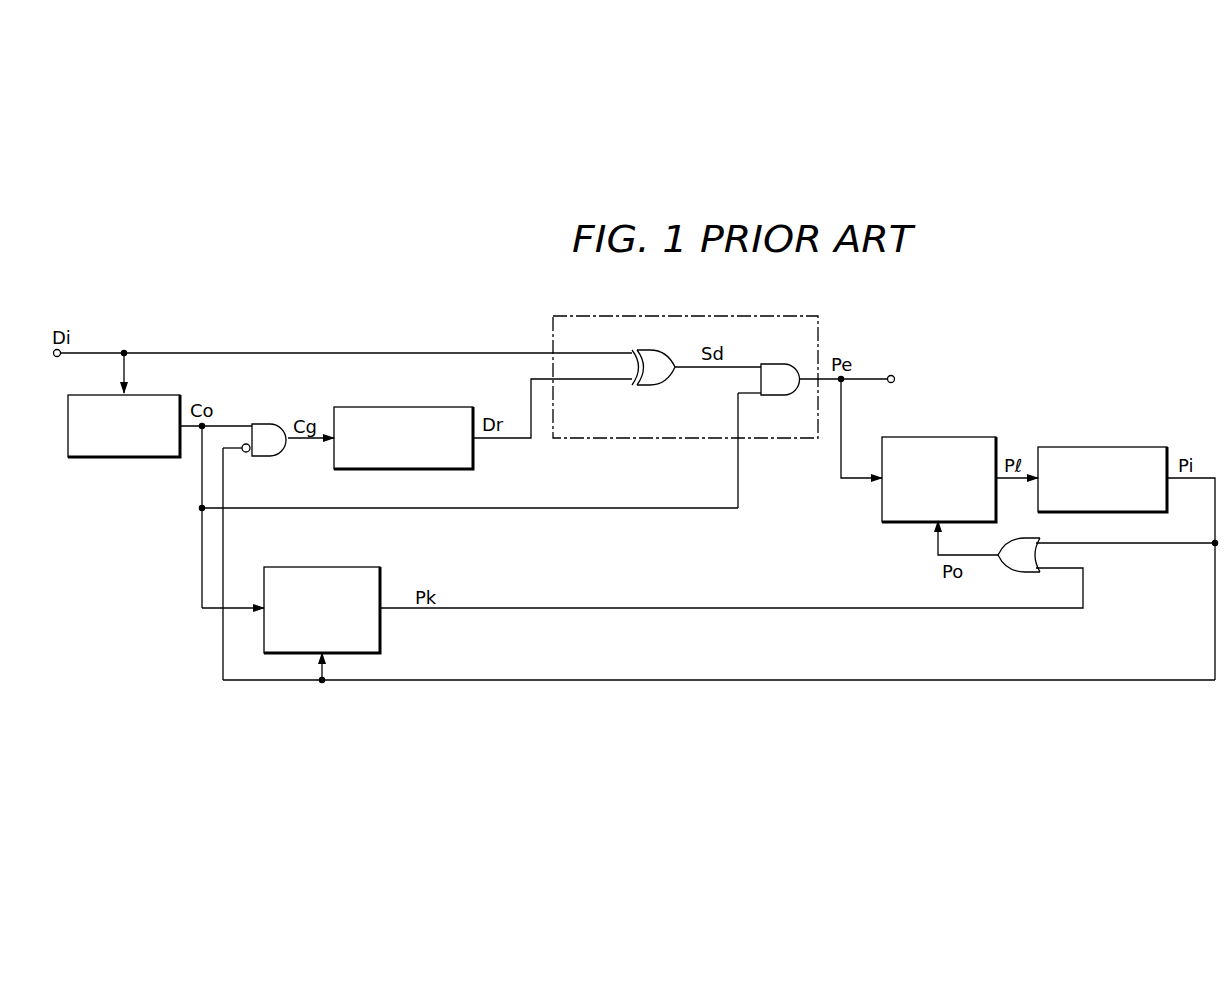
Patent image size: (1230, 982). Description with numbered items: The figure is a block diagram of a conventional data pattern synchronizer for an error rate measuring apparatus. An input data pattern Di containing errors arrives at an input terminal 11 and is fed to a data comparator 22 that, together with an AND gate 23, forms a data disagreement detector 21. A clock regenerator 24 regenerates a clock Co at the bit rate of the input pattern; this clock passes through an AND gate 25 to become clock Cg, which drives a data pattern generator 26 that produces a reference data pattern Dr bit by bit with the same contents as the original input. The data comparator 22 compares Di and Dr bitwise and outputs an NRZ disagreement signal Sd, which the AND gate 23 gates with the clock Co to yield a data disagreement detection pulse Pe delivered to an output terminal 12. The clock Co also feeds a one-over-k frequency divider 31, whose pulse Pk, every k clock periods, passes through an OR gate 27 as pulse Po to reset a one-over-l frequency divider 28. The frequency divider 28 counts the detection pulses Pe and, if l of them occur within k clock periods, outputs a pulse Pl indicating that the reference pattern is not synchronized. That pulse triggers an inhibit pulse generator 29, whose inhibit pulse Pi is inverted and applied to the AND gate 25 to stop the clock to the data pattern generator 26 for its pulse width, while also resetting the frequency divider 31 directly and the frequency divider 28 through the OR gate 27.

The input terminal 11 is at (62, 357).
The output terminal 12 is at (895, 375).
The data disagreement detector 21 is at (782, 314).
The data comparator 22 is at (658, 350).
The AND gate 23 is at (773, 364).
The clock regenerator 24 is at (137, 458).
The AND gate 25 is at (265, 421).
The data pattern generator 26 is at (443, 407).
The OR gate 27 is at (1012, 573).
The 1/l-frequency divider 28 is at (960, 437).
The inhibit pulse generator 29 is at (1125, 447).
The 1/k-frequency divider 31 is at (343, 567).